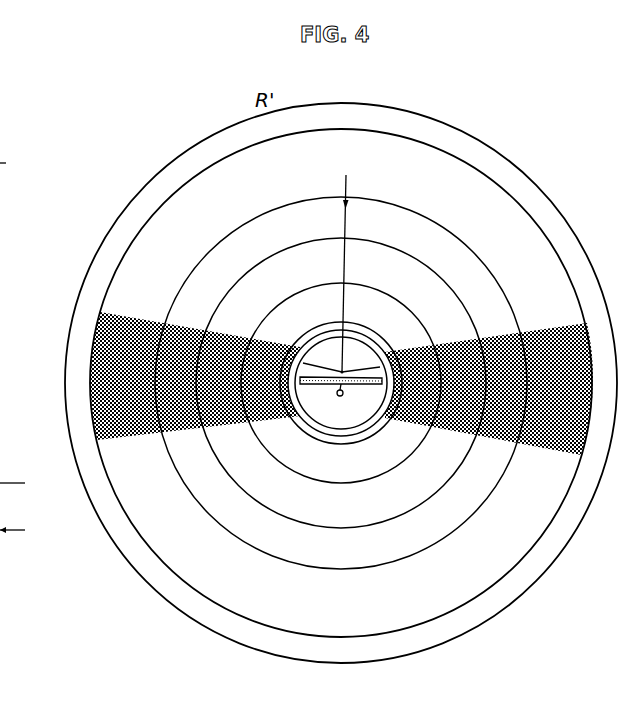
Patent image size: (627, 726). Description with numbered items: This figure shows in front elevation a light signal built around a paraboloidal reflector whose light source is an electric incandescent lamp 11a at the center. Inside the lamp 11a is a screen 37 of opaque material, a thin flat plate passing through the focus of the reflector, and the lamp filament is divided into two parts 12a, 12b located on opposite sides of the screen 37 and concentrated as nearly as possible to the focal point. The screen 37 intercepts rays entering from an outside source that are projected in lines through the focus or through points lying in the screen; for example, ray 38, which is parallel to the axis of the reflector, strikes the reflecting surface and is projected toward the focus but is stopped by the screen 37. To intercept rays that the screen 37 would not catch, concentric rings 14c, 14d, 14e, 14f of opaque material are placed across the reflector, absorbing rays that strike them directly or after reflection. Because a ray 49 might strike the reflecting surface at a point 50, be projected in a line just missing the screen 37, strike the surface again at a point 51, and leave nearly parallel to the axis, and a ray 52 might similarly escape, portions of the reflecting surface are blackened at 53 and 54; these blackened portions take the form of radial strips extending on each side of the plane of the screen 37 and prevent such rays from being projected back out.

The electric incandescent lamp 11a is at (310, 415).
The filament part 12a is at (350, 358).
The filament part 12b is at (339, 396).
The ring of opaque material 14c is at (301, 201).
The ring of opaque material 14d is at (319, 237).
The ring of opaque material 14e is at (320, 284).
The ring of opaque material 14f is at (325, 323).
The screen 37 is at (372, 385).
The ray 38 is at (347, 229).
The ray 49 is at (100, 313).
The point 50 is at (247, 343).
The point 51 is at (453, 430).
The ray 52 is at (91, 398).
The blackened portion 53 is at (549, 333).
The blackened portion 54 is at (149, 322).